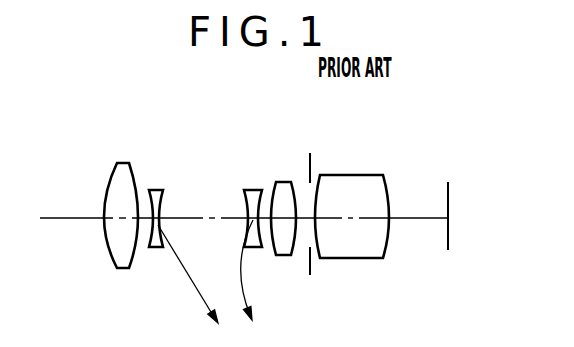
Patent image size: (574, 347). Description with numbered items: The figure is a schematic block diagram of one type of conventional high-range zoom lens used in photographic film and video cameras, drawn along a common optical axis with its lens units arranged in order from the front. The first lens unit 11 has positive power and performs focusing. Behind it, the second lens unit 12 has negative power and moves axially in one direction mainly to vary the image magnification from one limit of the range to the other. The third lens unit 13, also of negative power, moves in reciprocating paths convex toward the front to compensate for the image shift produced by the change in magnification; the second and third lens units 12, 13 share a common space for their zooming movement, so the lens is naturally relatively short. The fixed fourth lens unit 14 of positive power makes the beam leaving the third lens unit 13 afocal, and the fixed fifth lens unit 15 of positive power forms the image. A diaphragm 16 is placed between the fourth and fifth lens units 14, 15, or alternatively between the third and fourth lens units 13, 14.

The first lens unit 11 is at (125, 163).
The second lens unit 12 is at (158, 190).
The third lens unit 13 is at (254, 190).
The fourth lens unit 14 is at (285, 182).
The fifth lens unit 15 is at (366, 175).
The diaphragm 16 is at (311, 165).